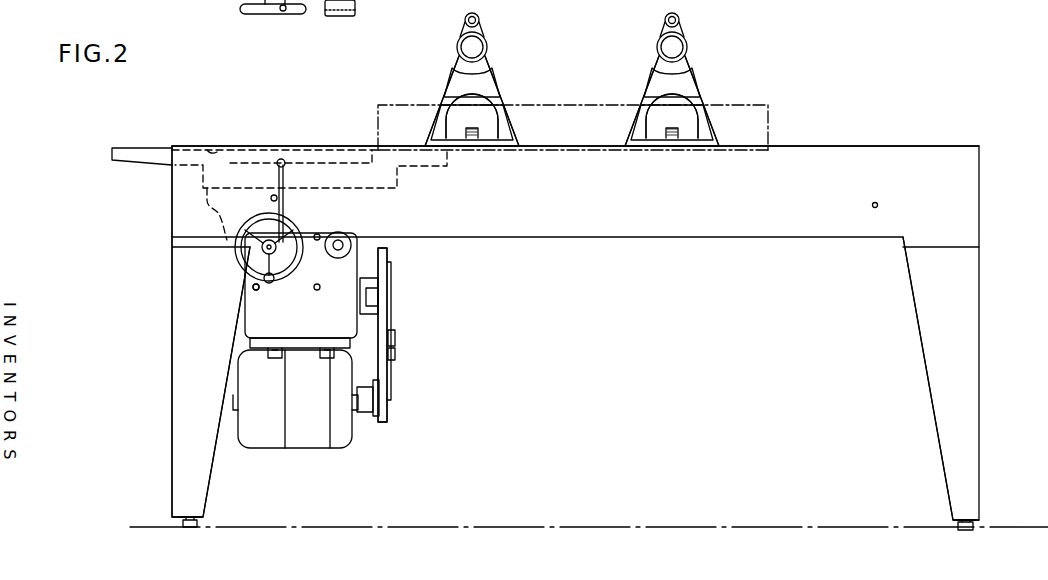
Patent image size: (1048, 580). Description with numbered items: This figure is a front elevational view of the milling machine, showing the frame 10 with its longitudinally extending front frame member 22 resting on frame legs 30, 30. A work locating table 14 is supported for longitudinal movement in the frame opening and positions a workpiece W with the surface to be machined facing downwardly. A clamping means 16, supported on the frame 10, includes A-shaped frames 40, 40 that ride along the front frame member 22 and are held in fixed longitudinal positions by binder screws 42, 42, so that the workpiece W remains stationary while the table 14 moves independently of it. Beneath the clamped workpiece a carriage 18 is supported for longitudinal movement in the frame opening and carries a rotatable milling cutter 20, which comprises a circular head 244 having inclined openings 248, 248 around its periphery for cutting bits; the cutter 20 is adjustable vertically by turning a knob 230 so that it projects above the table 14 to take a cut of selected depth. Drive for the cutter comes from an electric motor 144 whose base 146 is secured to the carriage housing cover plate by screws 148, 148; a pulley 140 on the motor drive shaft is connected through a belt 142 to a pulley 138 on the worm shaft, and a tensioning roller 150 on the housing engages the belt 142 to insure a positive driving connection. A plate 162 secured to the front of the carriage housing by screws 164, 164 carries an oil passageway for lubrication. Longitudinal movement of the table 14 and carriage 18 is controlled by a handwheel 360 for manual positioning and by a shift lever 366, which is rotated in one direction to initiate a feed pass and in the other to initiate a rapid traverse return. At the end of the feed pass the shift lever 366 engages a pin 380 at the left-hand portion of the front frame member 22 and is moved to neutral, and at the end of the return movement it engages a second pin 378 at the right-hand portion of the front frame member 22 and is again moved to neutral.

The frame 10 is at (975, 0).
The work locating table 14 is at (145, 170).
The clamping means 16 is at (450, 46).
The carriage 18 is at (390, 252).
The milling cutter 20 is at (248, 140).
The front frame member 22 is at (790, 240).
The frame leg 30 is at (172, 292).
The A-shaped frame 40 is at (498, 84).
The binder screw 42 is at (478, 128).
The pulley 138 is at (392, 262).
The pulley 140 is at (380, 388).
The belt 142 is at (396, 337).
The electric motor 144 is at (312, 450).
The base 146 is at (334, 356).
The screw 148 is at (278, 360).
The tensioning roller 150 is at (396, 354).
The plate 162 is at (308, 290).
The screw 164 is at (252, 286).
The knob 230 is at (366, 224).
The circular head 244 is at (360, 130).
The inclined opening 248 is at (208, 144).
The handwheel 360 is at (238, 262).
The shift lever 366 is at (284, 200).
The second pin 378 is at (881, 188).
The pin 380 is at (274, 194).
The workpiece W is at (770, 104).